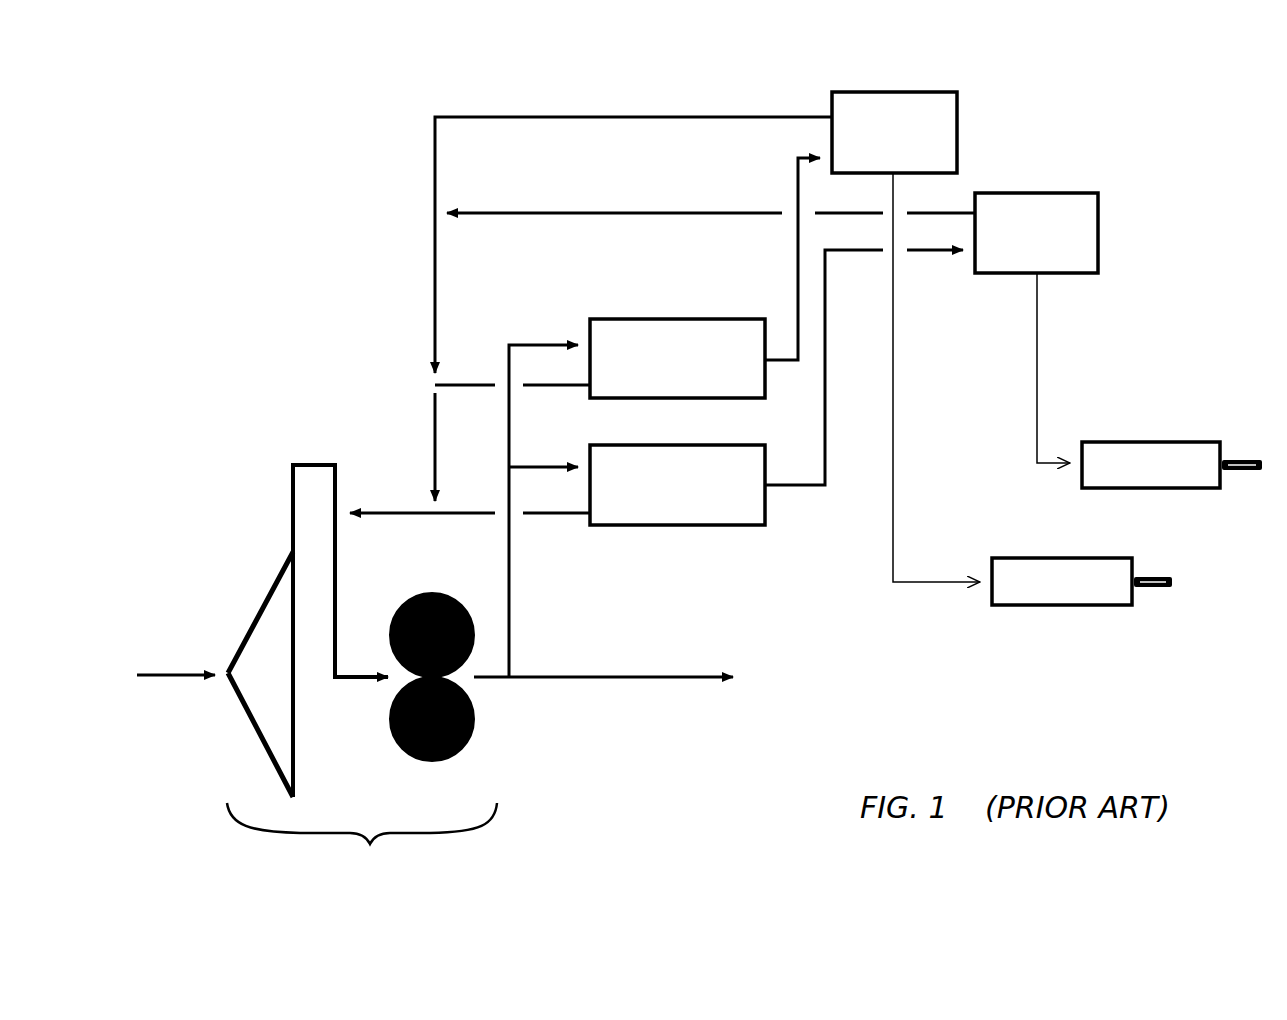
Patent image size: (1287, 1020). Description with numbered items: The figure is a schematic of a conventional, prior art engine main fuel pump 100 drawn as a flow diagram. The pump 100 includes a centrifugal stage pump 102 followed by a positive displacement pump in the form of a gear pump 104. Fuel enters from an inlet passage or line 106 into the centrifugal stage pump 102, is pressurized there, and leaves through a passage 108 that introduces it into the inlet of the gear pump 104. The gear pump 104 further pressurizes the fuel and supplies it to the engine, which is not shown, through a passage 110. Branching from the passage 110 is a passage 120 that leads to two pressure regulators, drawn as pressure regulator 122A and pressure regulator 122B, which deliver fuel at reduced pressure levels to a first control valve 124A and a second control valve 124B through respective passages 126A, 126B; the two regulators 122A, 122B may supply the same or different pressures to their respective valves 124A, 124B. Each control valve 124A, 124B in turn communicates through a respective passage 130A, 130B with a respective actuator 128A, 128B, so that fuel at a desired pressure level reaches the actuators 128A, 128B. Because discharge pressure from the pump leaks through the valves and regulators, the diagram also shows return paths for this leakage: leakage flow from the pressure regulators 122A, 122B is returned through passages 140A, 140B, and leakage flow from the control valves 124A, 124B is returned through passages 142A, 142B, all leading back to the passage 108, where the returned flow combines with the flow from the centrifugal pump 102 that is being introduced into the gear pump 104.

The engine main fuel pump 100 is at (362, 846).
The centrifugal stage pump 102 is at (252, 617).
The gear pump 104 is at (468, 750).
The passage or line 106 is at (173, 690).
The passage 108 is at (312, 463).
The passage 110 is at (600, 677).
The passage 120 is at (512, 602).
The pressure regulator 122A is at (751, 302).
The pressure regulator 122B is at (703, 445).
The control valve 124A is at (898, 92).
The control valve 124B is at (1052, 193).
The passage 126A is at (795, 250).
The passage 126B is at (823, 402).
The actuator 128A is at (1073, 607).
The actuator 128B is at (1130, 442).
The passage 130A is at (895, 528).
The passage 130B is at (1040, 367).
The passage 140A is at (465, 382).
The passage 140B is at (460, 512).
The passage 142A is at (622, 115).
The passage 142B is at (618, 210).